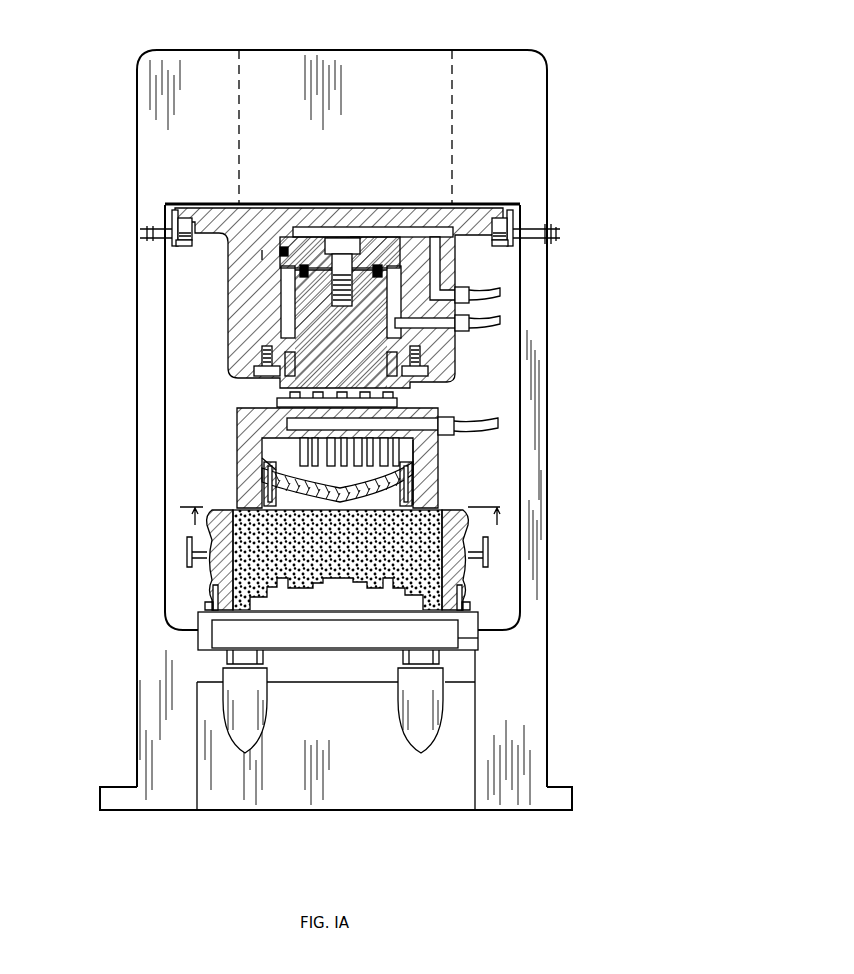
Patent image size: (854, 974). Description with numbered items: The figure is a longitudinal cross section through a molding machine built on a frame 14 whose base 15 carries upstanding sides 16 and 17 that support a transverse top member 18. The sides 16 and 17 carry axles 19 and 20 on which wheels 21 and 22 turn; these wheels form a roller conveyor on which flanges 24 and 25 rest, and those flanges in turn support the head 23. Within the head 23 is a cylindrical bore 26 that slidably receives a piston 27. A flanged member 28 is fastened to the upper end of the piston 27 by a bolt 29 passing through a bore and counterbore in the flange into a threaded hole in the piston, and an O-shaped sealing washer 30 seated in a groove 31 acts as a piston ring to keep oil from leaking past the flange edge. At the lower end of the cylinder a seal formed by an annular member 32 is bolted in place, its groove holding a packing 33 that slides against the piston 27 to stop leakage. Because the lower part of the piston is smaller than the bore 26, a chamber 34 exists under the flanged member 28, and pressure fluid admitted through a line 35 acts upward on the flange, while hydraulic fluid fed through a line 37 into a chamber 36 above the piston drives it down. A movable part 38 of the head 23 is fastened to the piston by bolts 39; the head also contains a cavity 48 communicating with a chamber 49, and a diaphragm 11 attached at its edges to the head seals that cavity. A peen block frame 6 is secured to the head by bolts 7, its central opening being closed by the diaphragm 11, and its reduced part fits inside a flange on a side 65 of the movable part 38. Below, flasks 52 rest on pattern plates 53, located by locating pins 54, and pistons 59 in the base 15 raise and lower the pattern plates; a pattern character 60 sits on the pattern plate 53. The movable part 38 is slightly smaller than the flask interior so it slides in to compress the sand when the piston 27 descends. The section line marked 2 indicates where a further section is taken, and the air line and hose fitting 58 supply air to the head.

The section line 2- 2 is at (340, 520).
The peen block frame 6 is at (272, 496).
The bolts 7 is at (268, 500).
The diaphragm 11 is at (312, 498).
The frame 14 is at (545, 453).
The base 15 is at (533, 737).
The upstanding side 16 is at (545, 407).
The upstanding side 17 is at (137, 372).
The transverse top member 18 is at (480, 62).
The axle 19 is at (536, 228).
The axle 20 is at (152, 225).
The wheel 21 is at (183, 243).
The wheel 22 is at (500, 246).
The head 23 is at (233, 305).
The flange 24 is at (500, 216).
The flange 25 is at (186, 212).
The cylindrical bore 26 is at (290, 305).
The piston 27 is at (375, 248).
The flanged member 28 is at (305, 263).
The bolt 29 is at (338, 246).
The O-shaped sealing washer 30 is at (290, 246).
The groove 31 is at (262, 250).
The annular member 32 is at (285, 380).
The packing 33 is at (410, 382).
The chamber 34 is at (398, 310).
The line 35 is at (478, 327).
The chamber 36 is at (357, 237).
The line 37 is at (478, 298).
The movable part 38 is at (428, 457).
The bolts 39 is at (397, 399).
The cavity 48 is at (356, 472).
The chamber 49 is at (300, 424).
The flask 52 is at (243, 556).
The pattern plate 53 is at (241, 613).
The locating pins 54 is at (212, 598).
The air hose 58 is at (490, 431).
The pistons 59 is at (258, 690).
The pattern character 60 is at (345, 600).
The side 65 is at (258, 452).